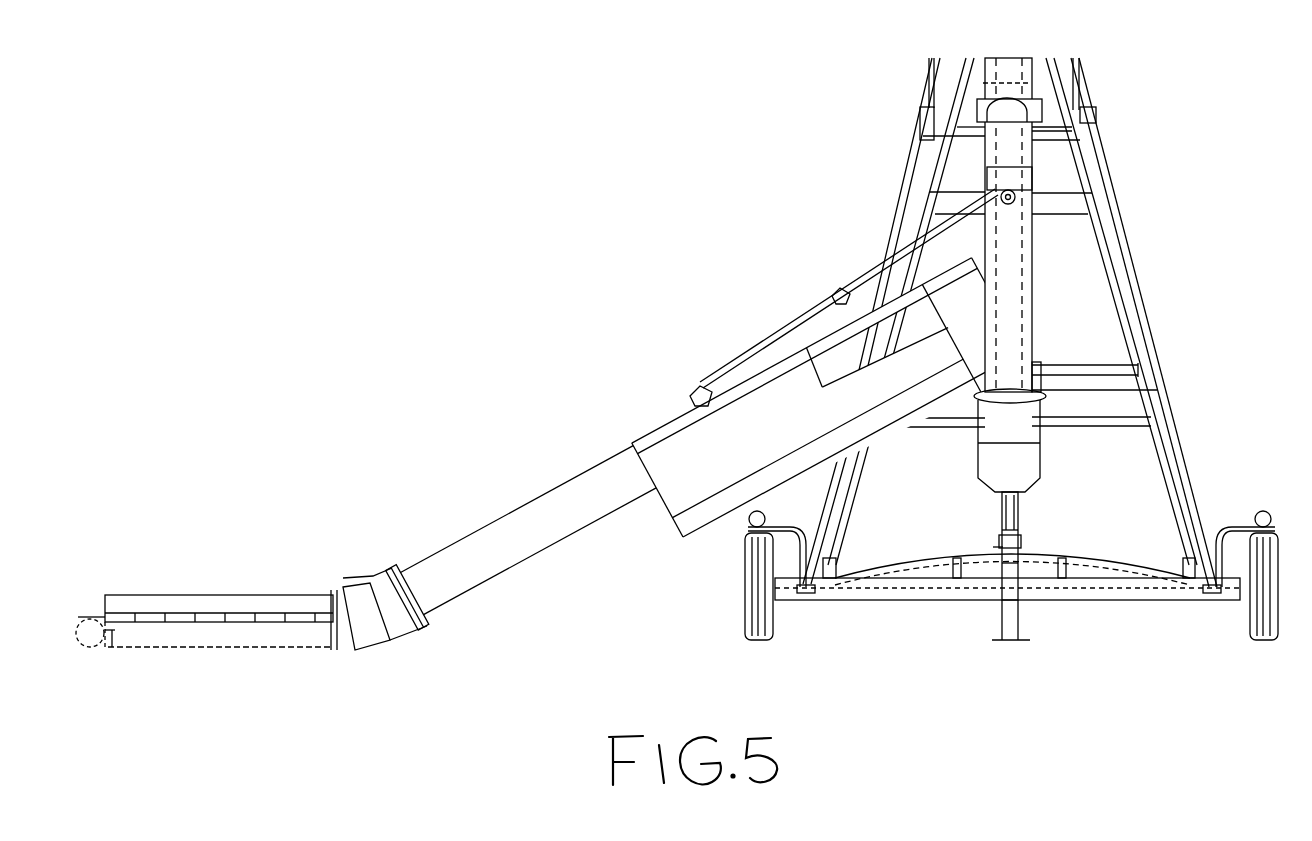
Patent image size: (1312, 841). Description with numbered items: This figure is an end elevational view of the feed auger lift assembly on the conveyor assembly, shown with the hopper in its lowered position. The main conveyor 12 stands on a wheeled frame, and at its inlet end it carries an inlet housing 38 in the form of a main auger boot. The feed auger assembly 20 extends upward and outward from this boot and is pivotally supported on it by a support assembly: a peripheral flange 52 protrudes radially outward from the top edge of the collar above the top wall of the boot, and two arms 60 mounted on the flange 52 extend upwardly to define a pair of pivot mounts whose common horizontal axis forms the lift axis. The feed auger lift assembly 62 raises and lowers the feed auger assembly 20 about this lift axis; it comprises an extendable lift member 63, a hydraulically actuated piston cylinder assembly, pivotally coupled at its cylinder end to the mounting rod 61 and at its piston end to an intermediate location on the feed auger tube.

The main conveyor 12 is at (985, 137).
The feed auger assembly 20 is at (662, 455).
The inlet housing 38 is at (1025, 468).
The peripheral flange 52 is at (1040, 390).
The arms 60 is at (1008, 272).
The mounting rod 61 is at (1035, 183).
The feed auger lift assembly 62 is at (838, 246).
The extendable lift member 63 is at (843, 298).